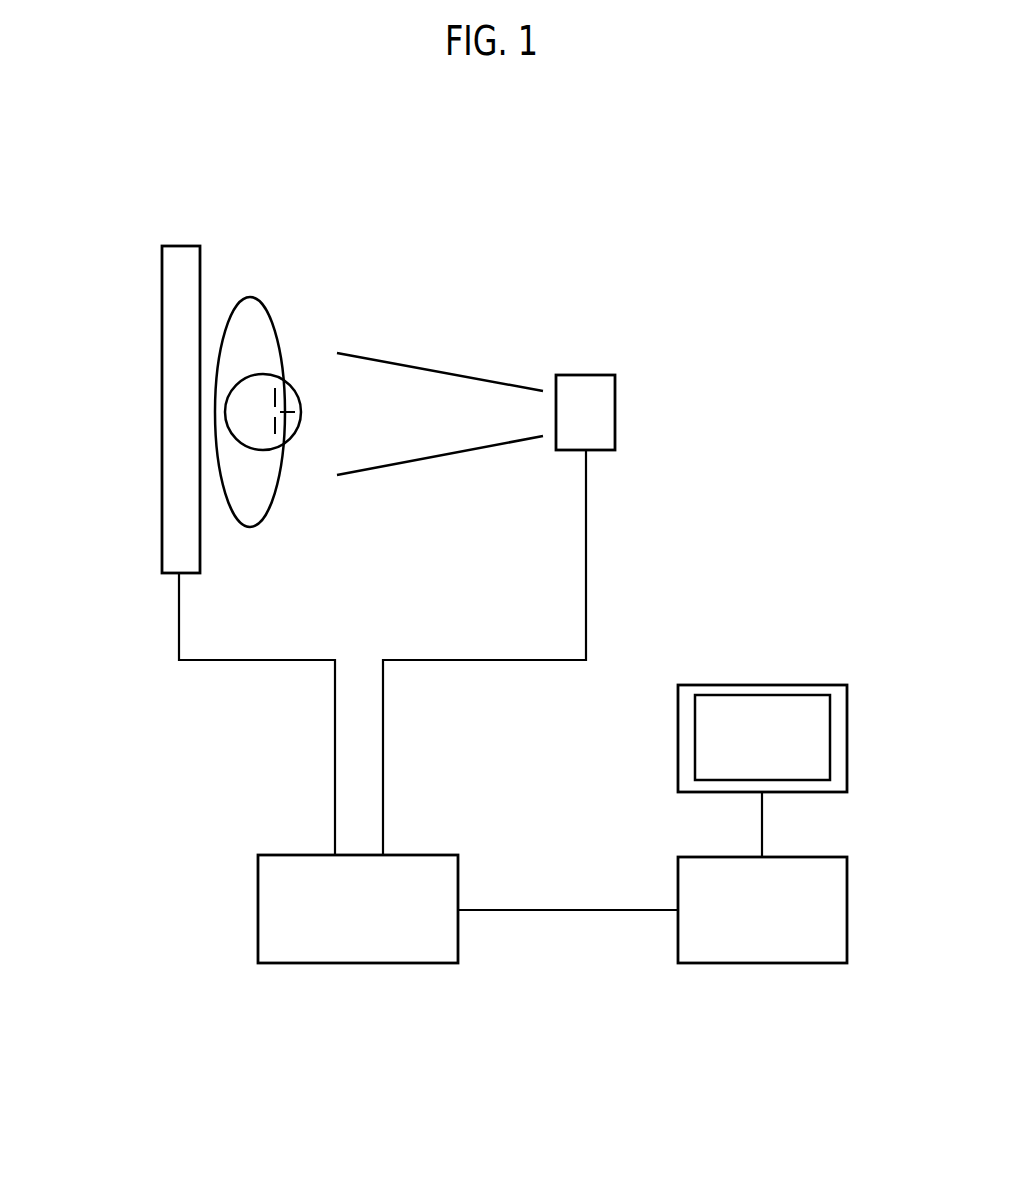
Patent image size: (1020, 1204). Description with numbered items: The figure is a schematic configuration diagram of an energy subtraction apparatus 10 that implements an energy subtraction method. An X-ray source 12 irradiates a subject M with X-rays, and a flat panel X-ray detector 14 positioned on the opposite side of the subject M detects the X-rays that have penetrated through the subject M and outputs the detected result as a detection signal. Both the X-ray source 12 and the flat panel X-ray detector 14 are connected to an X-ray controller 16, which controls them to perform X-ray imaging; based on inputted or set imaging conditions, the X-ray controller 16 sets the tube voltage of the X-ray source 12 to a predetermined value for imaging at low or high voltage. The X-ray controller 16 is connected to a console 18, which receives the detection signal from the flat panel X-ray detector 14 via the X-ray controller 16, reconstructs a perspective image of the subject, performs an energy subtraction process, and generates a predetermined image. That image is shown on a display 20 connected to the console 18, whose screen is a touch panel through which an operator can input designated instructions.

The energy subtraction apparatus 10 is at (577, 273).
The X-ray source 12 is at (615, 412).
The flat panel X-ray detector 14 is at (175, 308).
The X-ray controller 16 is at (357, 963).
The console 18 is at (760, 963).
The display 20 is at (847, 740).
The subject M is at (258, 322).